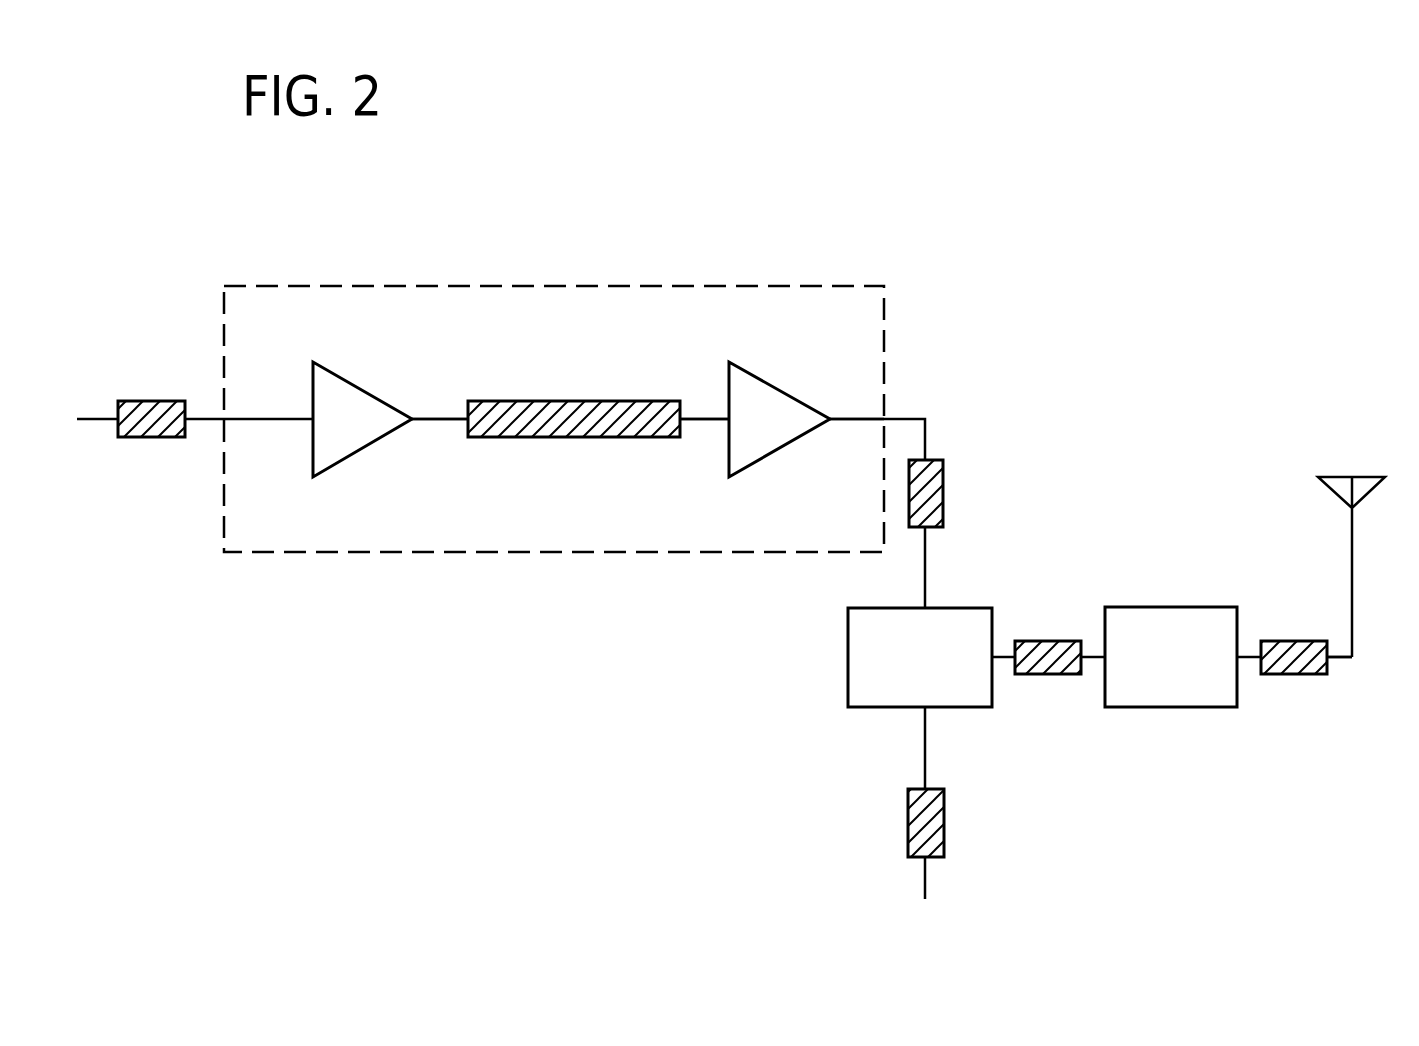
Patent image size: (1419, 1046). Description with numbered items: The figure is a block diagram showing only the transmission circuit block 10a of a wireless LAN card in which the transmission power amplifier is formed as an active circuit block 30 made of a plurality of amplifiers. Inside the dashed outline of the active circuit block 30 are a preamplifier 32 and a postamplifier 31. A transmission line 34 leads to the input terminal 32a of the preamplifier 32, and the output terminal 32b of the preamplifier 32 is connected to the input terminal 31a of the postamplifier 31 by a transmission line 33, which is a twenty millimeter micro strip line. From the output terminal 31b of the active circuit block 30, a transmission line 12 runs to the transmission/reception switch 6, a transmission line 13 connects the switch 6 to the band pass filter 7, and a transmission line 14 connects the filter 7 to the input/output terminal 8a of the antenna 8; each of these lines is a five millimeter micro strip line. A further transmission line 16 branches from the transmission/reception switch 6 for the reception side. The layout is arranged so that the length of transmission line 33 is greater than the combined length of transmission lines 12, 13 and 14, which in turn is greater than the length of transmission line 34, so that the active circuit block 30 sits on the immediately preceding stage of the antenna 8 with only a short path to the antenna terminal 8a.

The transmission circuit block 10a is at (771, 203).
The active circuit block 30 is at (585, 284).
The transmission line 34 is at (152, 401).
The preamplifier 32 is at (340, 383).
The input terminal of the preamplifier 32a is at (310, 418).
The output terminal of the preamplifier 32b is at (412, 418).
The transmission line 33 is at (577, 401).
The postamplifier 31 is at (755, 385).
The input terminal of the postamplifier 31a is at (728, 418).
The output terminal of the active circuit block 31b is at (830, 418).
The transmission line 12 is at (943, 483).
The transmission/reception switch 6 is at (848, 657).
The transmission line 13 is at (1050, 641).
The band pass filter 7 is at (1168, 607).
The transmission line 14 is at (1295, 641).
The antenna 8 is at (1347, 477).
The input/output terminal of the antenna 8a is at (1353, 658).
The transmission line 16 is at (944, 813).